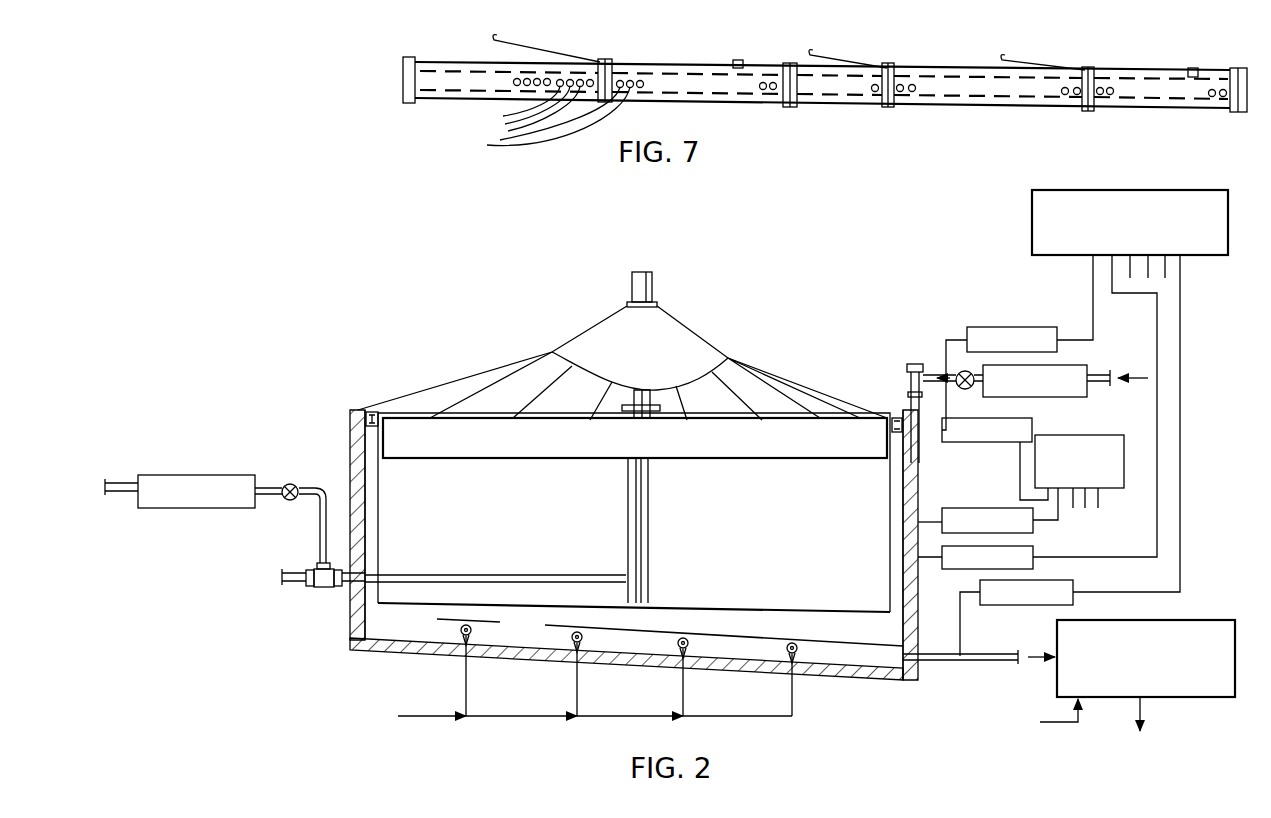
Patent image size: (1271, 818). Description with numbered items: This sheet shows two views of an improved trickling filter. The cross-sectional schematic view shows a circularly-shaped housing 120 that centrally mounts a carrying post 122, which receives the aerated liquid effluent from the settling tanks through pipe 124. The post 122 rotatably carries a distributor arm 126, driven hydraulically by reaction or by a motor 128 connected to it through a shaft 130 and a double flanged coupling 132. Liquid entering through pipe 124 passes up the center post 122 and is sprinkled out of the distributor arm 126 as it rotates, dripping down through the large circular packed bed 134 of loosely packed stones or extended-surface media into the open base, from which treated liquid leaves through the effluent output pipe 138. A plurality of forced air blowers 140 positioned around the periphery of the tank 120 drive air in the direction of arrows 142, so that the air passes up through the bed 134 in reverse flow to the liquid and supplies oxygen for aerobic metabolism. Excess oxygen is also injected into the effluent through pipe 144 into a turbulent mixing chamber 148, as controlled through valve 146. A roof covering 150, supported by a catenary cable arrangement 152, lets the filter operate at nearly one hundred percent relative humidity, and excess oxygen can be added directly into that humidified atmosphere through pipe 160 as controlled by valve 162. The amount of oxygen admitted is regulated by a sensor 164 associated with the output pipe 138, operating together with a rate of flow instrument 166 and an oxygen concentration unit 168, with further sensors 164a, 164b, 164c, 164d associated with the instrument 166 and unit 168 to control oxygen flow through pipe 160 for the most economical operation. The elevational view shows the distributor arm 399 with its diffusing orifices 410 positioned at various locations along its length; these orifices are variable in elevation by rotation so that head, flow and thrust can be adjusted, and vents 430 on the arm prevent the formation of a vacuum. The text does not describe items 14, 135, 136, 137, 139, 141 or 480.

In FIG. 2, the flow direction 14 is at (718, 620).
In FIG. 2, the housing 120 is at (367, 470).
In FIG. 2, the carrying post 122 is at (648, 516).
In FIG. 2, the pipe 124 is at (522, 576).
In FIG. 2, the distributor arm 126 is at (866, 418).
In FIG. 2, the motor 128 is at (653, 288).
In FIG. 2, the shaft 130 is at (652, 392).
In FIG. 2, the double flanged coupling 132 is at (660, 408).
In FIG. 2, the packed bed 134 is at (520, 590).
In FIG. 2, the nozzle 135 is at (462, 638).
In FIG. 2, the injection tube 136 is at (600, 640).
In FIG. 2, the nozzle 137 is at (470, 640).
In FIG. 2, the effluent output pipe 138 is at (1005, 662).
In FIG. 2, the injection manifold 139 is at (542, 717).
In FIG. 2, the forced air blower 140 is at (365, 410).
In FIG. 2, the multiple short tubes for mixing 141 is at (1183, 697).
In FIG. 2, the arrows 142 is at (372, 498).
In FIG. 2, the pipe 144 is at (320, 538).
In FIG. 2, the valve 146 is at (290, 484).
In FIG. 2, the turbulent mixing chamber 148 is at (320, 588).
In FIG. 2, the roof covering 150 is at (685, 350).
In FIG. 2, the catenary cable arrangement 152 is at (765, 368).
In FIG. 2, the pipe 160 is at (926, 372).
In FIG. 2, the valve 162 is at (1044, 392).
In FIG. 2, the sensor 164 is at (1040, 605).
In FIG. 2, the sensor 164a is at (1035, 552).
In FIG. 2, the sensor 164b is at (988, 496).
In FIG. 2, the sensor 164c is at (1025, 418).
In FIG. 2, the sensor 164d is at (1053, 327).
In FIG. 2, the rate of flow instrument 166 is at (1080, 435).
In FIG. 2, the oxygen concentration unit 168 is at (1135, 190).
In FIG. 7, the distributor arm 399 is at (950, 62).
In FIG. 7, the diffusing orifices 410 is at (548, 115).
In FIG. 7, the vent 430 is at (743, 60).
In FIG. 7, the fitting 480 is at (1193, 68).